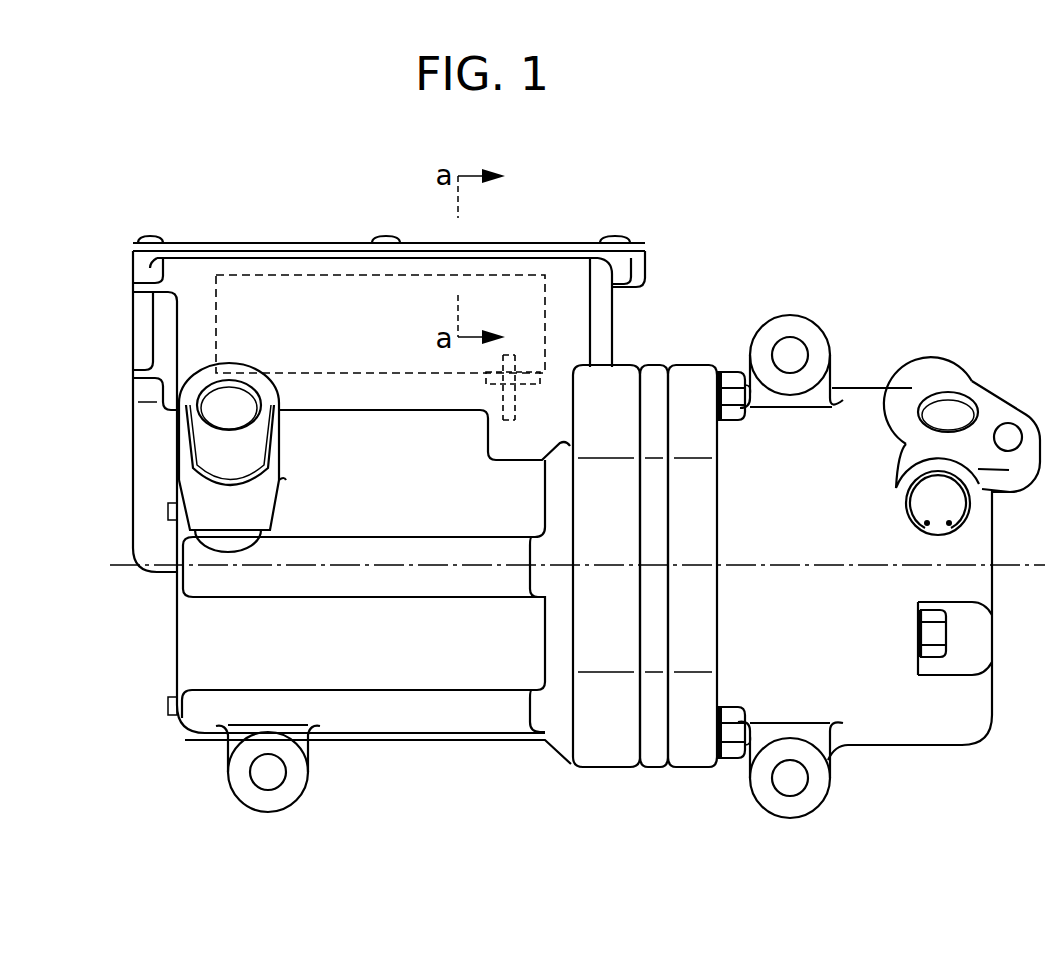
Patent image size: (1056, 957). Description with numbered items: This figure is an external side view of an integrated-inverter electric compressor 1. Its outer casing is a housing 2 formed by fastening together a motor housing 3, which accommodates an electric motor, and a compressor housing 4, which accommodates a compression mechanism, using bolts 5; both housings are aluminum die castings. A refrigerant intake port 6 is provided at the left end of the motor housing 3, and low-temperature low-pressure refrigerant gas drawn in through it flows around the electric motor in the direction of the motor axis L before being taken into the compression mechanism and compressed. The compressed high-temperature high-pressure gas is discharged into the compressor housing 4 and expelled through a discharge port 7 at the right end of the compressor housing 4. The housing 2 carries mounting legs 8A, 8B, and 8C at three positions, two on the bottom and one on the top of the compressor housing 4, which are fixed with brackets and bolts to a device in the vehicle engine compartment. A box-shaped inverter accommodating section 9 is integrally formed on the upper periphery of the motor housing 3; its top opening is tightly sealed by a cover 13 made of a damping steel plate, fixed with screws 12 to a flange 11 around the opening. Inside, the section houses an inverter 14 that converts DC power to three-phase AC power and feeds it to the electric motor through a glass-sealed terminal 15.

The integrated-inverter electric compressor 1 is at (788, 214).
The housing 2 is at (495, 764).
The motor housing 3 is at (205, 628).
The compressor housing 4 is at (913, 707).
The bolts 5 is at (729, 748).
The refrigerant intake port 6 is at (227, 410).
The discharge port 7 is at (958, 410).
The mounting leg 8A is at (810, 790).
The mounting leg 8B is at (270, 780).
The mounting leg 8C is at (818, 348).
The inverter accommodating section 9 is at (193, 318).
The flange 11 is at (563, 256).
The screws 12 is at (157, 236).
The cover 13 is at (252, 243).
The inverter 14 is at (347, 252).
The glass-sealed terminal 15 is at (490, 378).
The motor axis L is at (823, 564).